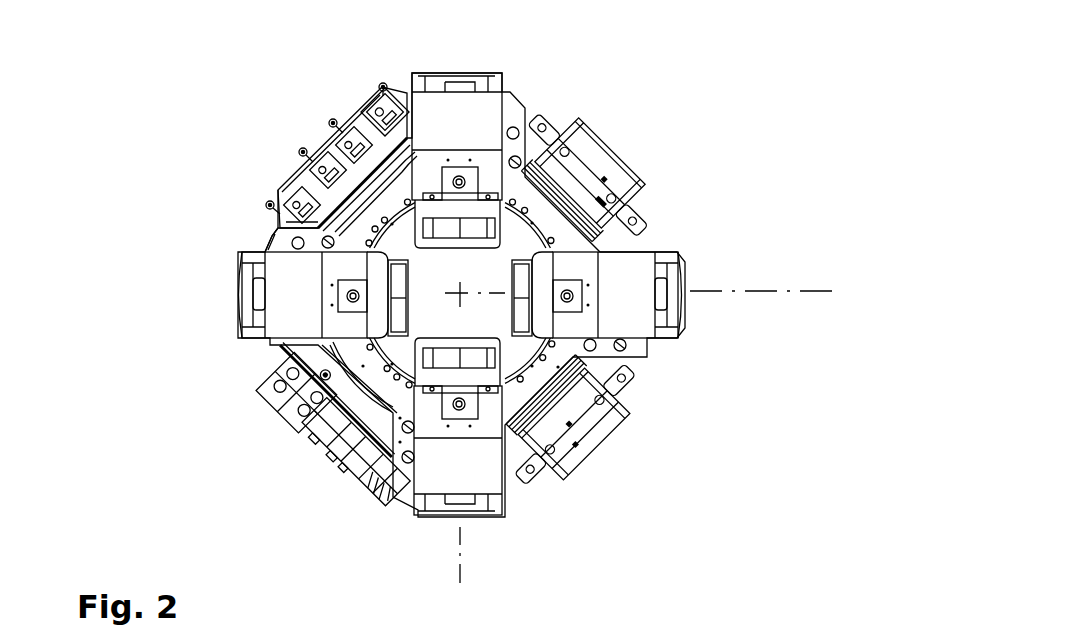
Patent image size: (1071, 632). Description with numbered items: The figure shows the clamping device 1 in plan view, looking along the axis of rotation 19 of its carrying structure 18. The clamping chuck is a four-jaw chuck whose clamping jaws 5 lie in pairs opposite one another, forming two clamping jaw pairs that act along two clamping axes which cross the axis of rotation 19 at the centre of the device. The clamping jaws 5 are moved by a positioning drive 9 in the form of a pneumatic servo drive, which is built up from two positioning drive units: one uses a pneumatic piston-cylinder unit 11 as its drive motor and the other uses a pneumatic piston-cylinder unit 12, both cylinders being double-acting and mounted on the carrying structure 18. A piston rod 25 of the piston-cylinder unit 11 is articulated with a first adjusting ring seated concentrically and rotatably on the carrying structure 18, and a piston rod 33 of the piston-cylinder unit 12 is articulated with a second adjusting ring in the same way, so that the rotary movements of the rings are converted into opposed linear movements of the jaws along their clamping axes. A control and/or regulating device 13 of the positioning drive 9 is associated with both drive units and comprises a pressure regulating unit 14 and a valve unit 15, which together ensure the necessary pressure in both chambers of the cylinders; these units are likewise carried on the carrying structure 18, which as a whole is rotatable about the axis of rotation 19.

The clamping device 1 is at (416, 282).
The clamping jaws 5 is at (452, 298).
The positioning drive 9 is at (607, 299).
The pneumatic piston-cylinder unit 11 is at (645, 178).
The pneumatic piston-cylinder unit 12 is at (619, 433).
The control and/or regulating device 13 is at (229, 200).
The pressure regulating unit 14 is at (298, 158).
The valve unit 15 is at (310, 447).
The carrying structure 18 is at (229, 316).
The axis of rotation 19 is at (461, 284).
The piston rod 25 is at (548, 126).
The piston rod 33 is at (616, 387).